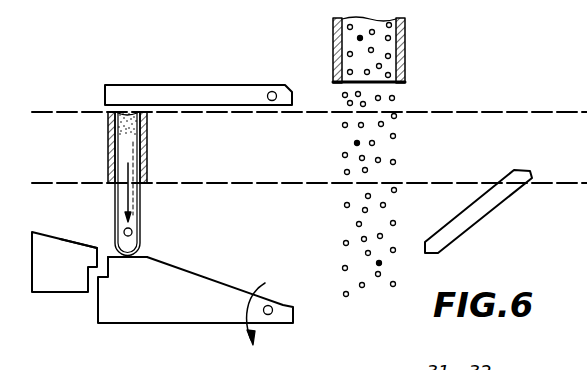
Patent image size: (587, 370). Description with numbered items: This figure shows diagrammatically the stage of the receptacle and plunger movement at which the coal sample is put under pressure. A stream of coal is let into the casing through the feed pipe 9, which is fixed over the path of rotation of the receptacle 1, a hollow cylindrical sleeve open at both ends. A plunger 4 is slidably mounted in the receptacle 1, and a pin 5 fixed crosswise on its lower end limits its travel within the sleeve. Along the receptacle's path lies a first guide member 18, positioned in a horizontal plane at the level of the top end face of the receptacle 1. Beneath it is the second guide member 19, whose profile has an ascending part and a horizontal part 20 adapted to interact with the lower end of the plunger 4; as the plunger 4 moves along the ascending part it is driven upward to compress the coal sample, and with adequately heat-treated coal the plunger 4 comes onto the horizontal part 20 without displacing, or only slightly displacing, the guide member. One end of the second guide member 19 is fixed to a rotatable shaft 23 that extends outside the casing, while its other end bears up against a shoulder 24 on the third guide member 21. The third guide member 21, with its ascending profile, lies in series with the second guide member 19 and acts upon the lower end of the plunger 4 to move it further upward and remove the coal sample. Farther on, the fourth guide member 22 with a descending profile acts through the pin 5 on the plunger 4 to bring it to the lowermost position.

The receptacle 1 is at (147, 132).
The plunger 4 is at (140, 216).
The pin 5 is at (118, 232).
The feed pipe 9 is at (408, 45).
The first guide member 18 is at (193, 92).
The second guide member 19 is at (182, 313).
The horizontal part 20 is at (143, 252).
The third guide member 21 is at (70, 282).
The fourth guide member 22 is at (478, 213).
The shaft 23 is at (273, 307).
The shoulder 24 is at (96, 247).